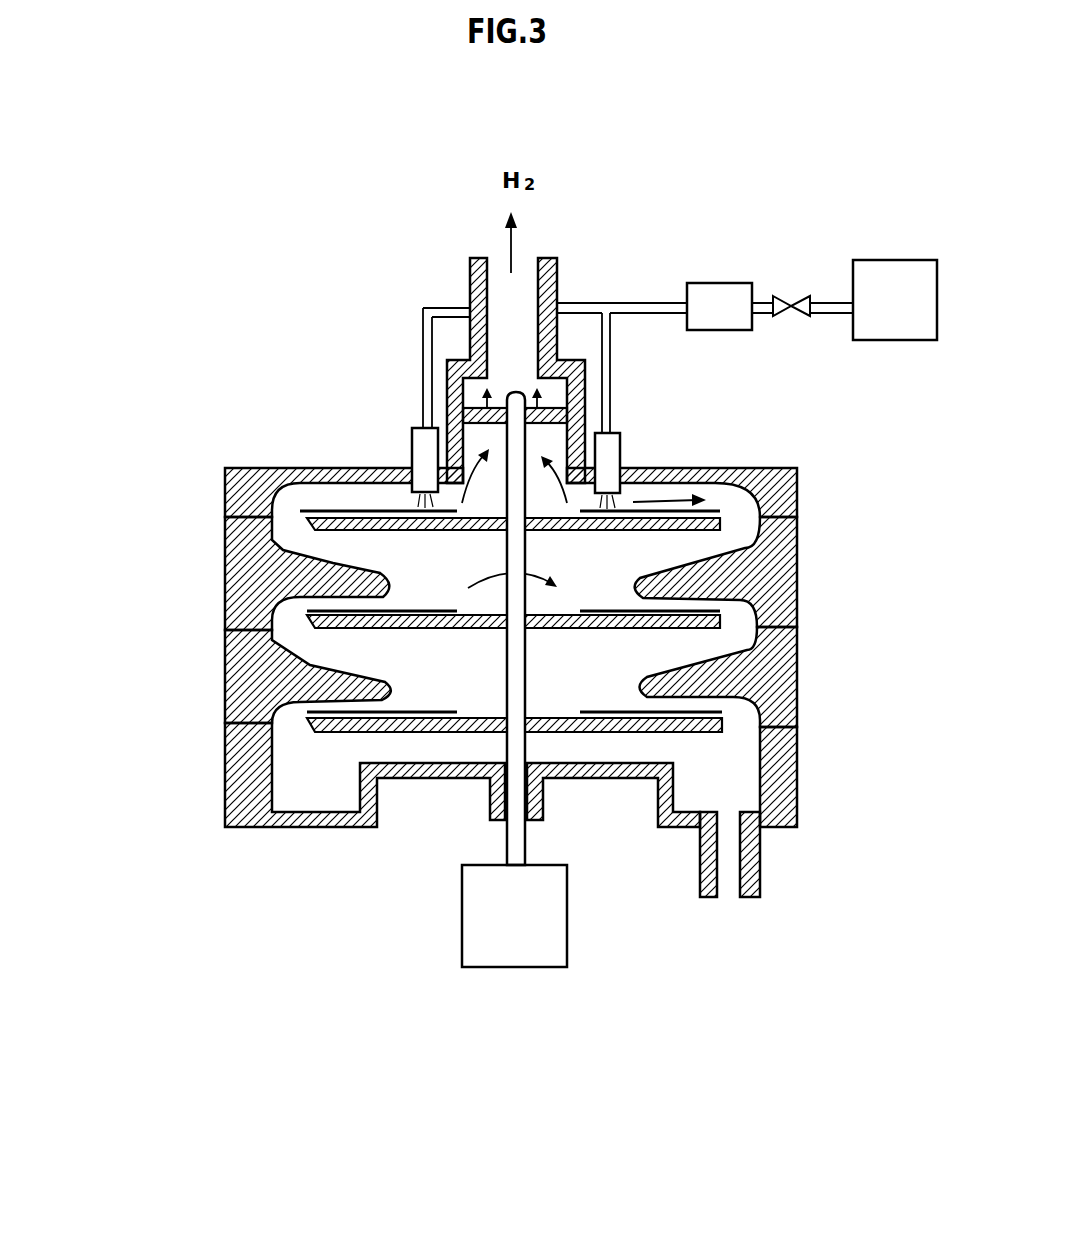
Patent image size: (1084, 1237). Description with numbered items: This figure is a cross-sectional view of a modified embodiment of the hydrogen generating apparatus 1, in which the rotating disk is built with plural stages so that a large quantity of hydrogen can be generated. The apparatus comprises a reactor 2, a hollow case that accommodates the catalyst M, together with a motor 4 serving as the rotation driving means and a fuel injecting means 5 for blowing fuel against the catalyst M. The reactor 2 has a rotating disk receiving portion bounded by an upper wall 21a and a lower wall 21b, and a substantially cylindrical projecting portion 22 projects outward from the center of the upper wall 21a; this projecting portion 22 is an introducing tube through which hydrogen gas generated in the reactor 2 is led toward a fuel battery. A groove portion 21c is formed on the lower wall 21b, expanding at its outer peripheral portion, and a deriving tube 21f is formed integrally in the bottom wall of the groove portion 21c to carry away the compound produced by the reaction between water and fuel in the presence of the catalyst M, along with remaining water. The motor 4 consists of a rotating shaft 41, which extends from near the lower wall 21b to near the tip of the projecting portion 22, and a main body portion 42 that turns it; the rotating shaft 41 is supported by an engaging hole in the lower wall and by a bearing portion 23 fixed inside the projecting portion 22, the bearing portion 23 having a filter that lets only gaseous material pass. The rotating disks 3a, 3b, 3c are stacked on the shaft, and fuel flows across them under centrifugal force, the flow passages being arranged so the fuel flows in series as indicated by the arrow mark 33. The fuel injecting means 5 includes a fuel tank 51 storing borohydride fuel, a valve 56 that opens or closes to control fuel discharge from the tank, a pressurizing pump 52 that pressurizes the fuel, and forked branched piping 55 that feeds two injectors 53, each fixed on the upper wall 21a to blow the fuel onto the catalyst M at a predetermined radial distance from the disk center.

The hydrogen generating apparatus 1 is at (337, 246).
The reactor 2 is at (213, 432).
The upper wall 21a is at (225, 483).
The lower wall 21b is at (225, 545).
The groove portion 21c is at (225, 773).
The deriving tube 21f is at (745, 897).
The projecting portion 22 is at (450, 362).
The bearing portion 23 is at (487, 412).
The rotating disk 3a is at (693, 538).
The rotating disk 3b is at (683, 632).
The rotating disk 3c is at (683, 733).
The arrow mark 33 is at (657, 495).
The catalyst M is at (330, 508).
The motor 4 is at (518, 969).
The rotating shaft 41 is at (505, 832).
The main body portion 42 is at (567, 943).
The fuel injecting means 5 is at (690, 165).
The fuel tank 51 is at (885, 260).
The pressurizing pump 52 is at (705, 283).
The injector 53 is at (413, 470).
The piping 55 is at (641, 303).
The valve 56 is at (792, 295).